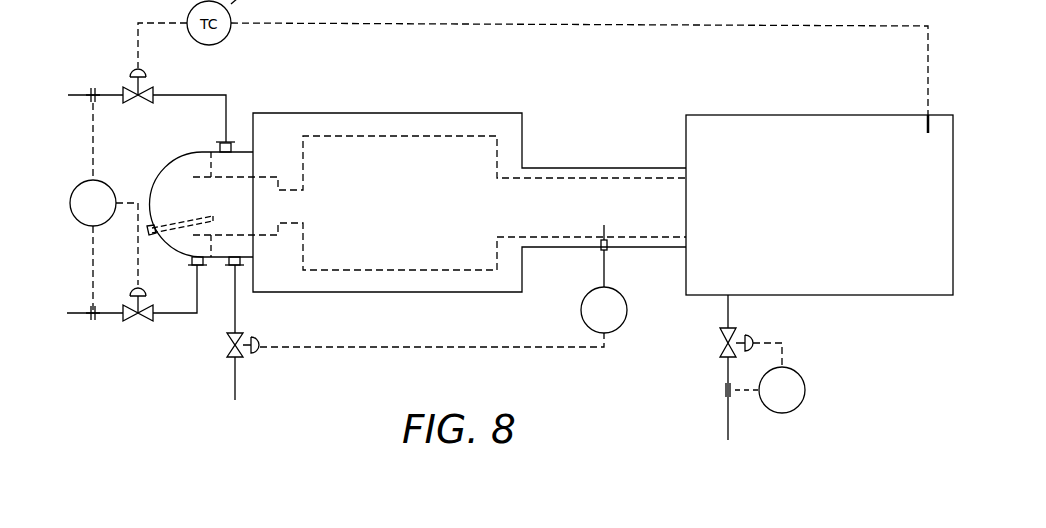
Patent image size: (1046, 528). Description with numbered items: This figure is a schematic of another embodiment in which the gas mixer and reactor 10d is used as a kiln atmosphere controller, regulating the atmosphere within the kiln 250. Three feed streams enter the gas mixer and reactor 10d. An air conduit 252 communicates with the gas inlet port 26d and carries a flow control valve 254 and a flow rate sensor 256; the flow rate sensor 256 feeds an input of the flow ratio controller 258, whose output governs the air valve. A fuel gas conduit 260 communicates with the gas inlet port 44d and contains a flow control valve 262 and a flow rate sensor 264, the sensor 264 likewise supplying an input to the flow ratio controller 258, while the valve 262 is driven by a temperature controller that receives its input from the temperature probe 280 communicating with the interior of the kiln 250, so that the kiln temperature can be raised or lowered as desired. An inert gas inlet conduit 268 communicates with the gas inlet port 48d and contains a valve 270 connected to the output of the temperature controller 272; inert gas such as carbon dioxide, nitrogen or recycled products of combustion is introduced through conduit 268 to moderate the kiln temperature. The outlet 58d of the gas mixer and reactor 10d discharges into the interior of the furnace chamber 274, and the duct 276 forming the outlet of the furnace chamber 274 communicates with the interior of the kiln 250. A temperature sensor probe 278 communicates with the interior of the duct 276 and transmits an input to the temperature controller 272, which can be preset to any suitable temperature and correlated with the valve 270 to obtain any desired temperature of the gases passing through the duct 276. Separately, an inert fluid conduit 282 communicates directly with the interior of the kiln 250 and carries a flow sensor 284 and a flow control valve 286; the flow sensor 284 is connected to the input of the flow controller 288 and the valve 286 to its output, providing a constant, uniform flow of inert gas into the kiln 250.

The gas mixer and reactor 10d is at (150, 173).
The gas inlet port 26d is at (191, 260).
The gas inlet port 44d is at (234, 147).
The gas inlet port 48d is at (233, 266).
The outlet 58d is at (298, 192).
The kiln 250 is at (882, 128).
The air conduit 252 is at (182, 313).
The flow control valve 254 is at (145, 321).
The flow rate sensor 256 is at (93, 320).
The flow ratio controller 258 is at (77, 187).
The fuel gas conduit 260 is at (190, 95).
The flow control valve 262 is at (145, 103).
The flow rate sensor 264 is at (95, 87).
The inert gas inlet conduit 268 is at (236, 315).
The valve 270 is at (229, 355).
The temperature controller 272 is at (615, 298).
The furnace chamber 274 is at (478, 292).
The duct 276 is at (582, 197).
The temperature sensor probe 278 is at (608, 228).
The temperature probe 280 is at (927, 128).
The inert fluid conduit 282 is at (728, 313).
The flow sensor 284 is at (722, 392).
The flow control valve 286 is at (720, 343).
The flow controller 288 is at (805, 390).